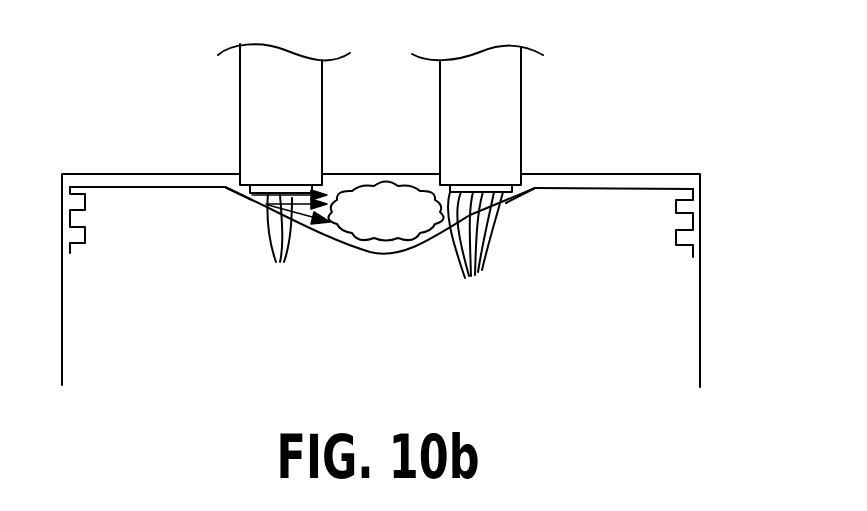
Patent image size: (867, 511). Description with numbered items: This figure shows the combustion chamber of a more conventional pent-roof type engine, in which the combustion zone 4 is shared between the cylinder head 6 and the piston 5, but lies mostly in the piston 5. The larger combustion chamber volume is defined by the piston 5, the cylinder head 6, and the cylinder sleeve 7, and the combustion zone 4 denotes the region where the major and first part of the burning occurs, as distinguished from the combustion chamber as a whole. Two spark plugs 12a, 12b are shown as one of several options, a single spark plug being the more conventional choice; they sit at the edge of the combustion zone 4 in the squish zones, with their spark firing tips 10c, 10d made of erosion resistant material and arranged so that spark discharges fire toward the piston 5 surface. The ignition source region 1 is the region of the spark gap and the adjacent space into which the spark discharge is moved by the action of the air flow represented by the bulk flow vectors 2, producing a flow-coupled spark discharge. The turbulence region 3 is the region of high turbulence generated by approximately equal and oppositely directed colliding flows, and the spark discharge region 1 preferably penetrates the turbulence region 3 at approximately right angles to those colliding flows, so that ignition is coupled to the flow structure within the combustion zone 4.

The ignition source region 1 is at (475, 252).
The flow vectors 2 is at (291, 243).
The turbulence region 3 is at (378, 222).
The combustion zone 4 is at (413, 183).
The piston 5 is at (618, 227).
The cylinder head 6 is at (602, 145).
The cylinder sleeve 7 is at (702, 298).
The spark firing tip 10c is at (254, 196).
The spark firing tip 10d is at (506, 197).
The spark plug 12a is at (310, 133).
The spark plug 12b is at (452, 128).